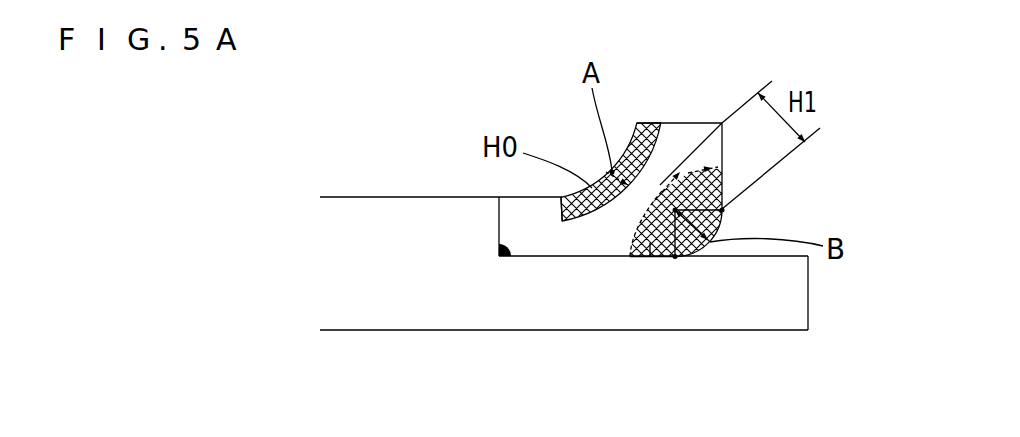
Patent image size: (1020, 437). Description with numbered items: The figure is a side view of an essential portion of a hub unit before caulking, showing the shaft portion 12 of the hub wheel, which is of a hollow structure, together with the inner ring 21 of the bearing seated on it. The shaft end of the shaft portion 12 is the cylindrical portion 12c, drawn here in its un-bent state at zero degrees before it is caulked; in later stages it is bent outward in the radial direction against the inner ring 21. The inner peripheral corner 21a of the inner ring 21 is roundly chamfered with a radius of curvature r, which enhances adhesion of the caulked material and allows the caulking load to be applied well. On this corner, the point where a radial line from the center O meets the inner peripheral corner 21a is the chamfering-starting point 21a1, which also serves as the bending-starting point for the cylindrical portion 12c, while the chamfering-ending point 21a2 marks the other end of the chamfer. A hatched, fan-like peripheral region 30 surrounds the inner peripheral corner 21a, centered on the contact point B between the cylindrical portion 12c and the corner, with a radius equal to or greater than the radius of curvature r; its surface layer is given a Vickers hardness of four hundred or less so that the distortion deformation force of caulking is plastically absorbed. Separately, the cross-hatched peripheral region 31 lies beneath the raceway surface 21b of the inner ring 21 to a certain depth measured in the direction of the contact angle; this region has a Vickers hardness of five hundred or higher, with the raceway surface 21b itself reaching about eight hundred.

The shaft portion 12 is at (393, 317).
The cylindrical portion 12c is at (800, 302).
The inner ring 21 is at (682, 125).
The inner peripheral corner 21a is at (702, 249).
The chamfering-starting point 21a1 is at (675, 259).
The chamfering-ending point 21a2 is at (724, 211).
The raceway surface 21b is at (627, 148).
The peripheral region 30 is at (650, 243).
The peripheral region of the raceway surface 31 is at (590, 219).